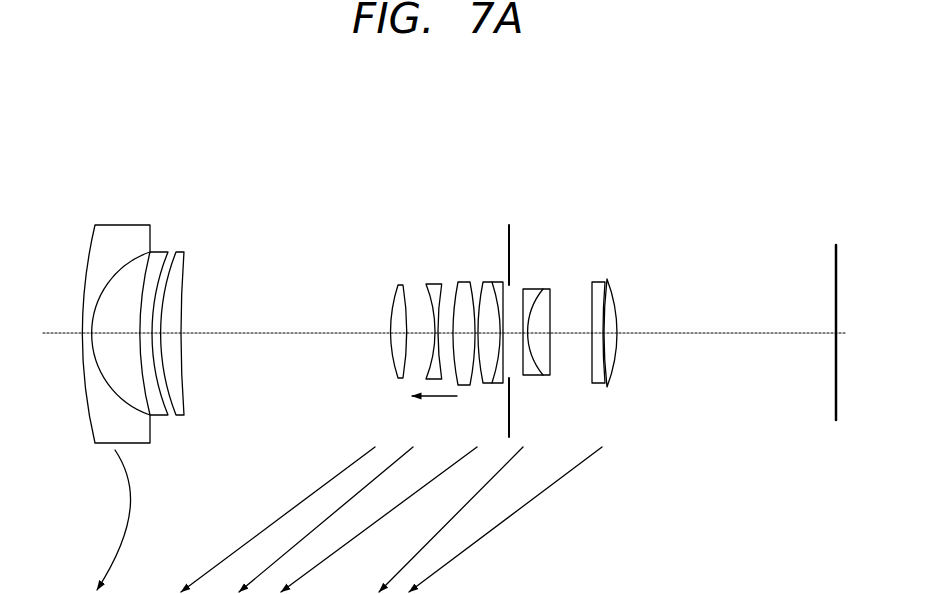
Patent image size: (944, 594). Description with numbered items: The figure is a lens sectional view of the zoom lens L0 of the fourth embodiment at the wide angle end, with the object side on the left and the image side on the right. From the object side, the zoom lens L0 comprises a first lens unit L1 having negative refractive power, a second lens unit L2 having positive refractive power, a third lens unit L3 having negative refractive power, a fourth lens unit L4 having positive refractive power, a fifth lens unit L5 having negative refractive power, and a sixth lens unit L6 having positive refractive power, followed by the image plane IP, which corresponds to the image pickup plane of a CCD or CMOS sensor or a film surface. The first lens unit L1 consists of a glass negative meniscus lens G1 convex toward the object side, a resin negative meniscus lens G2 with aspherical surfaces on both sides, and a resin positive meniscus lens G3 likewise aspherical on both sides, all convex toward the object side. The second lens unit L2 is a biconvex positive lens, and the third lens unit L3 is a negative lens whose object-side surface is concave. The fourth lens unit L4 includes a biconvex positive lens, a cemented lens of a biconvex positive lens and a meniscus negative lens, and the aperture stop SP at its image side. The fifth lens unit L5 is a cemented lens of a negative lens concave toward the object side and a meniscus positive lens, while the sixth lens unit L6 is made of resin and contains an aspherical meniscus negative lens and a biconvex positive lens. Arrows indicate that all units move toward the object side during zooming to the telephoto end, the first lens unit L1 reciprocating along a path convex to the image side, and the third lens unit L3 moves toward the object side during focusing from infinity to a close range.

The zoom lens L0 is at (622, 118).
The first lens unit L1 is at (192, 184).
The negative lens G1 is at (95, 259).
The negative lens G2 is at (162, 257).
The positive lens G3 is at (183, 284).
The second lens unit L2 is at (415, 184).
The third lens unit L3 is at (448, 184).
The fourth lens unit L4 is at (507, 184).
The fifth lens unit L5 is at (560, 184).
The sixth lens unit L6 is at (622, 184).
The aperture stop SP is at (514, 243).
The image plane IP is at (828, 258).